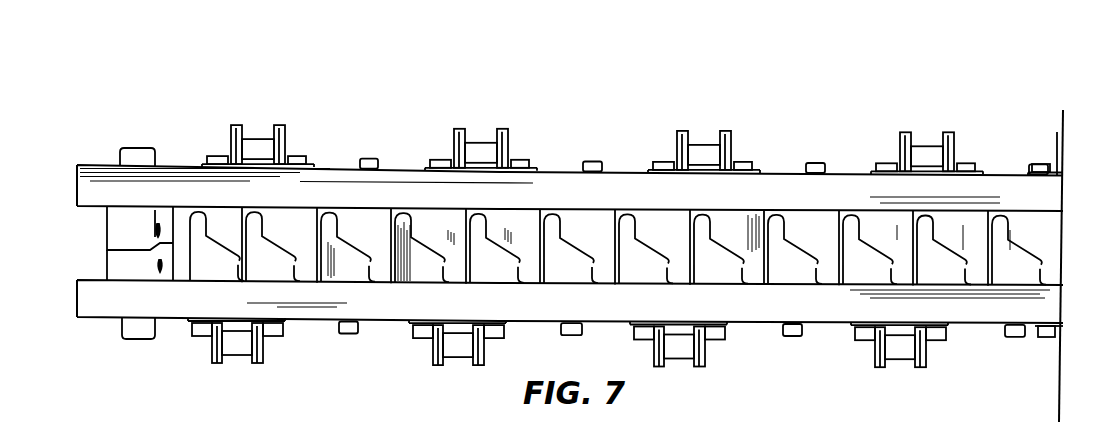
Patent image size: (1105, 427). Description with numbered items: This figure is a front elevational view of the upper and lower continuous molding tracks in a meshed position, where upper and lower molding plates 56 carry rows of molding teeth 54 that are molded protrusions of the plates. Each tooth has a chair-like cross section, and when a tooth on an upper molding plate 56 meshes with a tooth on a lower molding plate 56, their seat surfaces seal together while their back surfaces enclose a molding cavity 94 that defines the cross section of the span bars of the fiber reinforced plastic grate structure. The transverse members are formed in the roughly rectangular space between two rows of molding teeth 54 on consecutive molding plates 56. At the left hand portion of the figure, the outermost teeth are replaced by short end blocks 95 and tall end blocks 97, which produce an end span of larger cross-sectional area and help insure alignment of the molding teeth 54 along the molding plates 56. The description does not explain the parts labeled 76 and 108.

The molding teeth 54 is at (658, 271).
The molding plates 56 is at (640, 199).
The mounting bracket 76 is at (255, 136).
The molding cavity 94 is at (460, 257).
The short end blocks 95 is at (143, 274).
The tall end blocks 97 is at (143, 234).
The end line 108 is at (981, 425).